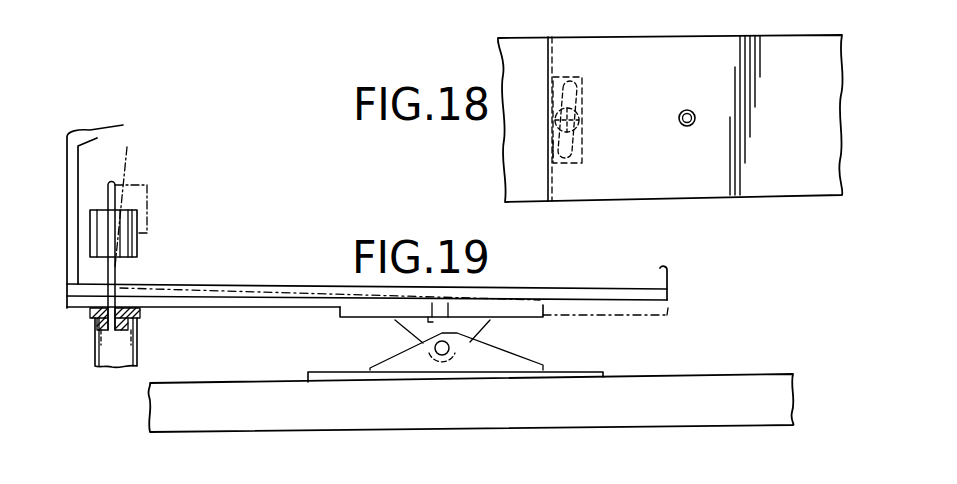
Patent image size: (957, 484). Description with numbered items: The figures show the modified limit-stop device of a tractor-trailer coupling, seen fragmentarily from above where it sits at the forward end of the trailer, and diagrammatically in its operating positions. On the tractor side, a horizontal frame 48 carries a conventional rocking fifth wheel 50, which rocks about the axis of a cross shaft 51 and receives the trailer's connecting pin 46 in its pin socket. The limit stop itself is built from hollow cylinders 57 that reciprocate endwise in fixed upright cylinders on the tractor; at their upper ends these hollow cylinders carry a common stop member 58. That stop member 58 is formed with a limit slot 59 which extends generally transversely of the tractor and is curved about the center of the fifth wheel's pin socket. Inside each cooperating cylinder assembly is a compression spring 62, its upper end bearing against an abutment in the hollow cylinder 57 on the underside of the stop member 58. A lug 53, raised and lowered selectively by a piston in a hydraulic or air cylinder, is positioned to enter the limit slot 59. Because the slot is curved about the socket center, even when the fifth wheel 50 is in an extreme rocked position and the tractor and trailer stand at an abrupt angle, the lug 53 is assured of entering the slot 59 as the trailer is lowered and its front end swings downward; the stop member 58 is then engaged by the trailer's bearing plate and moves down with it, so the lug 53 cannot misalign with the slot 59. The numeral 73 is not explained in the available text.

In FIG. 18, the connecting pin 46 is at (690, 108).
In FIG. 19, the connecting pin 46 is at (453, 318).
In FIG. 19, the horizontal frame 48 is at (733, 388).
In FIG. 19, the rocking fifth wheel 50 is at (532, 308).
In FIG. 19, the cross shaft 51 is at (423, 343).
In FIG. 18, the lug 53 is at (553, 122).
In FIG. 19, the lug 53 is at (113, 288).
In FIG. 19, the hollow cylinder 57 is at (137, 355).
In FIG. 18, the stop member 58 is at (563, 100).
In FIG. 19, the stop member 58 is at (92, 315).
In FIG. 18, the limit slot 59 is at (553, 153).
In FIG. 19, the limit slot 59 is at (140, 320).
In FIG. 19, the compression spring 62 is at (98, 333).
In FIG. 19, the knob 73 is at (118, 230).